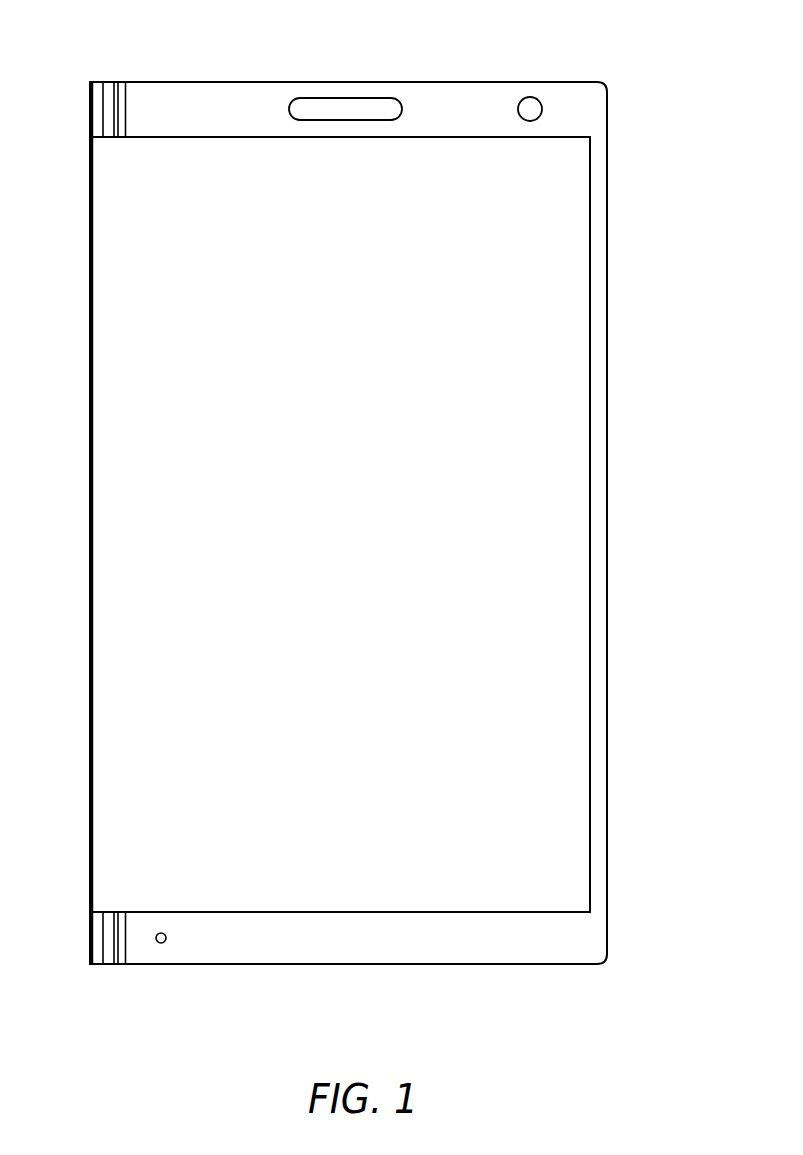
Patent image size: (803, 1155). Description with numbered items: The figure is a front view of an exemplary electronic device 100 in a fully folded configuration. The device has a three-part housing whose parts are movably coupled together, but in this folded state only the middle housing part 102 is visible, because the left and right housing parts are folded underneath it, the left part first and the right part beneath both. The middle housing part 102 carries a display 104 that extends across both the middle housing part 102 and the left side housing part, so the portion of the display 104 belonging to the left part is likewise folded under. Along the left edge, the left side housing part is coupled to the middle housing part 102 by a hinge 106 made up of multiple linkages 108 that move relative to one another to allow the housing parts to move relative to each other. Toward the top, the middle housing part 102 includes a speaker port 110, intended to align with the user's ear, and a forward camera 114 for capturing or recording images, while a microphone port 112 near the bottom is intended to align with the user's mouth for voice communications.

The electronic device 100 is at (648, 42).
The middle housing part 102 is at (598, 932).
The display 104 is at (117, 527).
The hinge 106 is at (96, 118).
The linkages 108 is at (145, 63).
The speaker port 110 is at (342, 98).
The microphone port 112 is at (163, 945).
The forward camera 114 is at (528, 97).